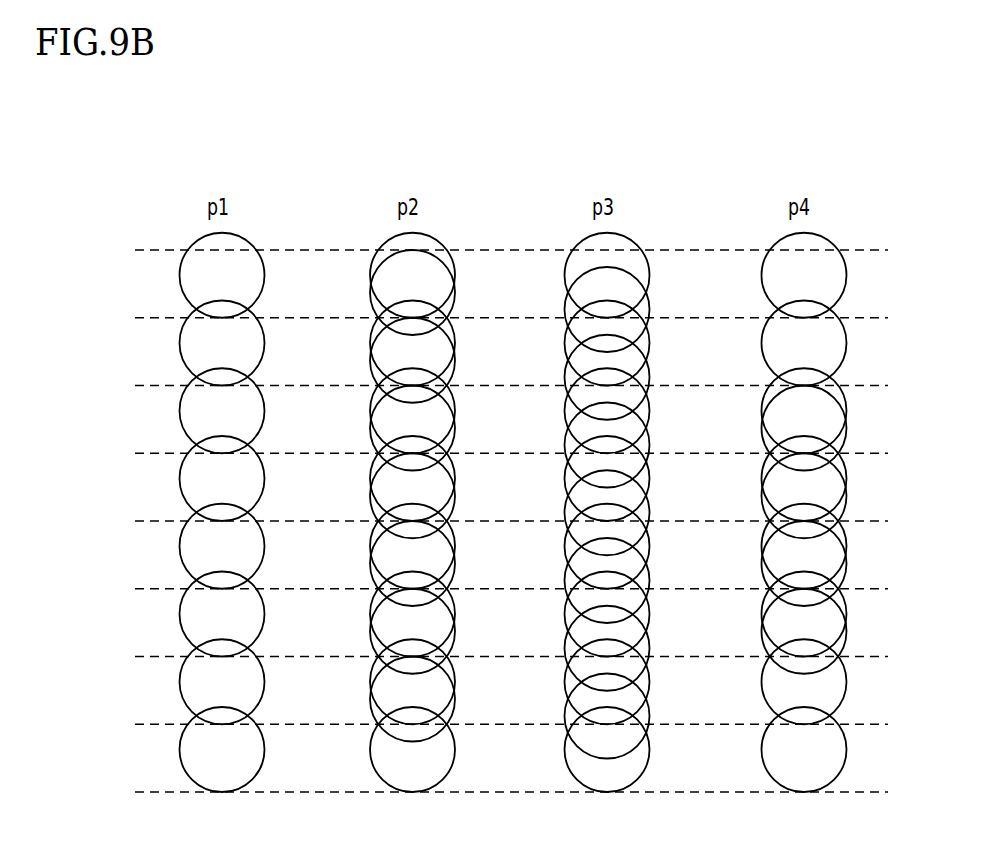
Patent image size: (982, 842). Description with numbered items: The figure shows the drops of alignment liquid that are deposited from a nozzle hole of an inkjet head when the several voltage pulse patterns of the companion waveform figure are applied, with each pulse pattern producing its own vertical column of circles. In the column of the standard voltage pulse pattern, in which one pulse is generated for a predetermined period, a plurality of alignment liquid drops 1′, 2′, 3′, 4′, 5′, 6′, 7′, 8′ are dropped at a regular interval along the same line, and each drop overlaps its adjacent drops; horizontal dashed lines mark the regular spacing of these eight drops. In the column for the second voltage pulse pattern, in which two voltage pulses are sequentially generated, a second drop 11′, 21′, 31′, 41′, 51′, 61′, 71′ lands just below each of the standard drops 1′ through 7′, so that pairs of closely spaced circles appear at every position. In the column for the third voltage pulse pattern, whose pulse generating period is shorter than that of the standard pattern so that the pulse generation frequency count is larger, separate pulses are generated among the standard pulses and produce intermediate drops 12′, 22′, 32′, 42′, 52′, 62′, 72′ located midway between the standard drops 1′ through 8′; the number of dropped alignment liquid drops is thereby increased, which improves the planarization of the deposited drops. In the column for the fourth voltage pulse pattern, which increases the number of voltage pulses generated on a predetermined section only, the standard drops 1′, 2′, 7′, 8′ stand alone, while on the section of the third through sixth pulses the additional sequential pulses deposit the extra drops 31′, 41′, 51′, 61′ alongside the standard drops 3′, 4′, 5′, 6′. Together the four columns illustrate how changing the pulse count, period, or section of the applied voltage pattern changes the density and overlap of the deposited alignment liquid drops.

The alignment liquid drop 1′ is at (180, 275).
The alignment liquid drop 2′ is at (180, 343).
The alignment liquid drop 3′ is at (180, 411).
The alignment liquid drop 4′ is at (180, 478).
The alignment liquid drop 5′ is at (180, 546).
The alignment liquid drop 6′ is at (180, 614).
The alignment liquid drop 7′ is at (180, 682).
The alignment liquid drop 8′ is at (180, 750).
The first shifted dot (quarter pitch offset) 11′ is at (455, 300).
The second shifted dot (quarter pitch offset) 21′ is at (455, 368).
The additional alignment liquid drop 31′ is at (455, 436).
The additional alignment liquid drop 41′ is at (455, 504).
The additional alignment liquid drop 51′ is at (455, 572).
The additional alignment liquid drop 61′ is at (455, 639).
The seventh shifted dot (quarter pitch offset) 71′ is at (455, 707).
The intermediate alignment liquid drop 12′ is at (650, 306).
The intermediate alignment liquid drop 22′ is at (650, 373).
The intermediate alignment liquid drop 32′ is at (650, 441).
The intermediate alignment liquid drop 42′ is at (650, 509).
The intermediate alignment liquid drop 52′ is at (650, 576).
The intermediate alignment liquid drop 62′ is at (650, 644).
The intermediate alignment liquid drop 72′ is at (650, 712).